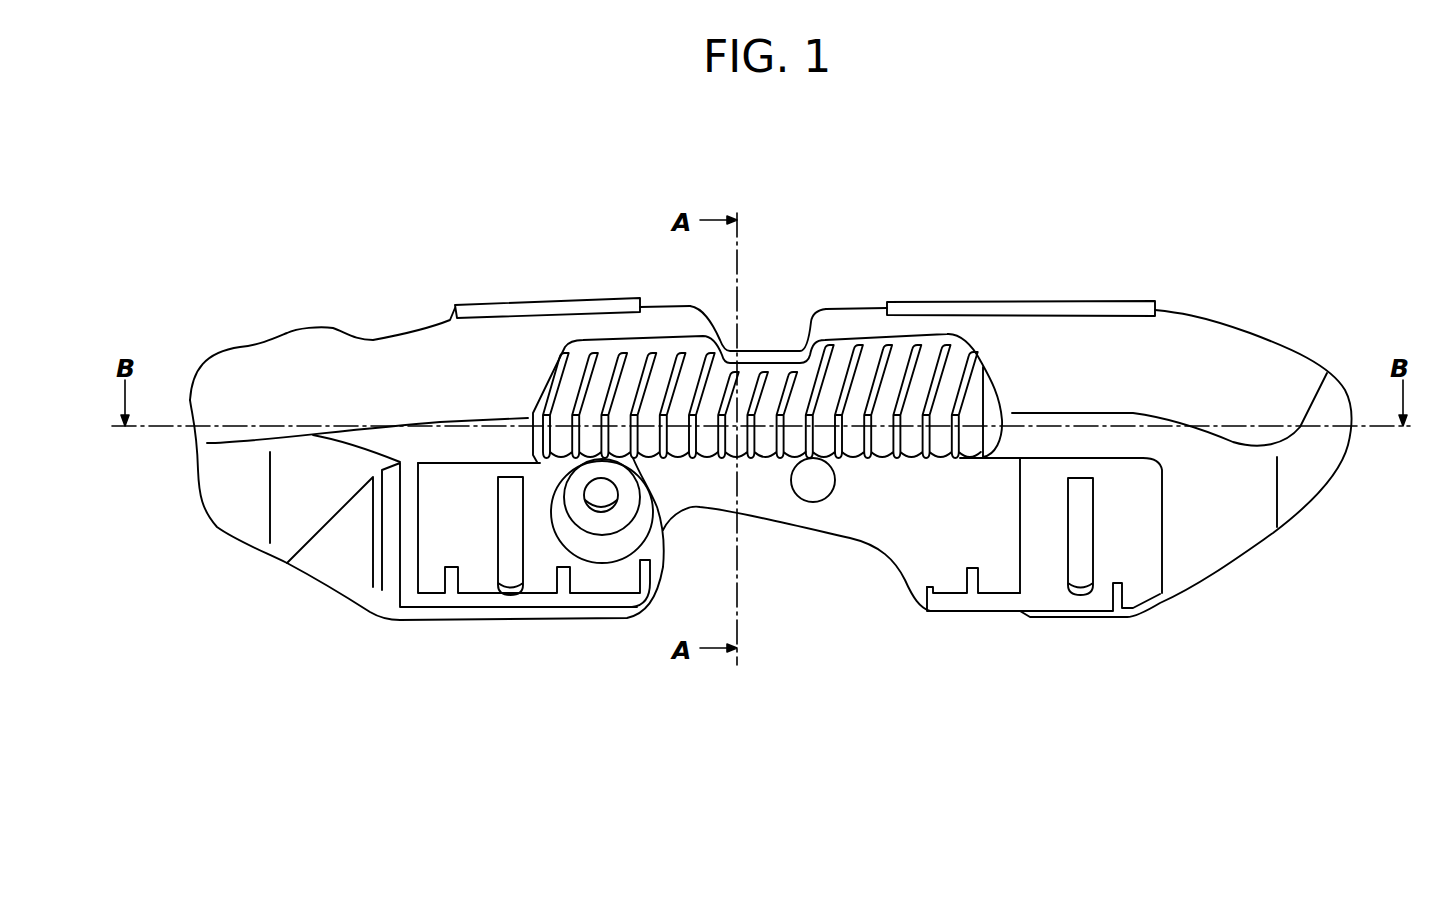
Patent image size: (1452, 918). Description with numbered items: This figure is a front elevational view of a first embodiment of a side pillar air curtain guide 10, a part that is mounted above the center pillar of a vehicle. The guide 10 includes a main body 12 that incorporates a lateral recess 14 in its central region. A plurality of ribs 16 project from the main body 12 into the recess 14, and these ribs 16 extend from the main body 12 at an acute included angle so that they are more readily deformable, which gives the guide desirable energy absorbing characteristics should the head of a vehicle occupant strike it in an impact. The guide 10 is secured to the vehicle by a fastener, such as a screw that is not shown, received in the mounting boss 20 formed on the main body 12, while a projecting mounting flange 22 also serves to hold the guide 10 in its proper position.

The side pillar air curtain guide 10 is at (1065, 222).
The main body 12 is at (1242, 530).
The lateral recess 14 is at (826, 345).
The ribs 16 is at (695, 362).
The mounting boss 20 is at (563, 527).
The mounting flange 22 is at (515, 308).